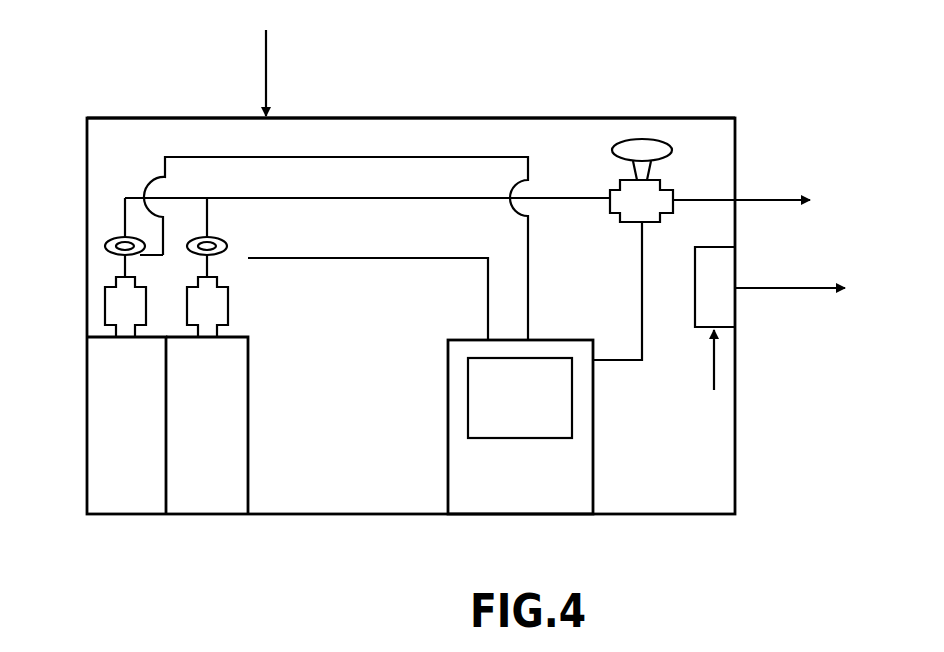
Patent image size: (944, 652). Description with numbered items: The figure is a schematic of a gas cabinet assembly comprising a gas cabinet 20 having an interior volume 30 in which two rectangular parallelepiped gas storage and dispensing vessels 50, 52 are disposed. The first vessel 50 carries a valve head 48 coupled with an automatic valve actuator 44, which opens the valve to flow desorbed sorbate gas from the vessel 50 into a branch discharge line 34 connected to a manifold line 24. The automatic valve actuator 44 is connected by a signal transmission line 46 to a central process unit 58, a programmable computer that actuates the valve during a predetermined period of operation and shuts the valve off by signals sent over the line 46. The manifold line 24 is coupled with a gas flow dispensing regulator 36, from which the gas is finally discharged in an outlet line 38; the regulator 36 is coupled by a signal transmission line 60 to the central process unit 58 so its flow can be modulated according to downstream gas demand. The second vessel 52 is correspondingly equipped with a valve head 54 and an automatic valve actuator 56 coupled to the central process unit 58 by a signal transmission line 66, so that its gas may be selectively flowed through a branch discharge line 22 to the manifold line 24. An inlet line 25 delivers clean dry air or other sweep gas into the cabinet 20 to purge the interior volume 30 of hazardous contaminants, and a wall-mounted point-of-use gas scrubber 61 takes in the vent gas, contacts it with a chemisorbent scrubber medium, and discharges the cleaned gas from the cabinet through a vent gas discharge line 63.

The gas cabinet 20 is at (117, 116).
The branch discharge line 22 is at (208, 232).
The manifold line 24 is at (317, 198).
The inlet line 25 is at (268, 50).
The interior volume 30 is at (341, 125).
The branch discharge line 34 is at (125, 198).
The gas flow dispensing regulator 36 is at (610, 203).
The outlet line 38 is at (705, 200).
The automatic valve actuator 44 is at (112, 240).
The signal transmission line 46 is at (163, 176).
The valve head 48 is at (118, 300).
The gas storage and dispensing vessel 50 is at (133, 508).
The gas storage and dispensing vessel 52 is at (200, 508).
The valve head 54 is at (220, 315).
The automatic valve actuator 56 is at (225, 248).
The central process unit 58 is at (550, 507).
The signal transmission line 60 is at (613, 360).
The point-of-use gas scrubber 61 is at (720, 317).
The vent gas discharge line 63 is at (773, 283).
The signal transmission line 66 is at (402, 259).